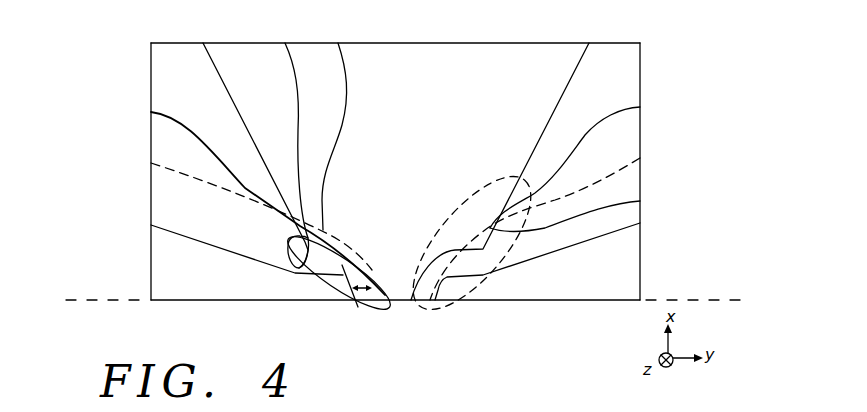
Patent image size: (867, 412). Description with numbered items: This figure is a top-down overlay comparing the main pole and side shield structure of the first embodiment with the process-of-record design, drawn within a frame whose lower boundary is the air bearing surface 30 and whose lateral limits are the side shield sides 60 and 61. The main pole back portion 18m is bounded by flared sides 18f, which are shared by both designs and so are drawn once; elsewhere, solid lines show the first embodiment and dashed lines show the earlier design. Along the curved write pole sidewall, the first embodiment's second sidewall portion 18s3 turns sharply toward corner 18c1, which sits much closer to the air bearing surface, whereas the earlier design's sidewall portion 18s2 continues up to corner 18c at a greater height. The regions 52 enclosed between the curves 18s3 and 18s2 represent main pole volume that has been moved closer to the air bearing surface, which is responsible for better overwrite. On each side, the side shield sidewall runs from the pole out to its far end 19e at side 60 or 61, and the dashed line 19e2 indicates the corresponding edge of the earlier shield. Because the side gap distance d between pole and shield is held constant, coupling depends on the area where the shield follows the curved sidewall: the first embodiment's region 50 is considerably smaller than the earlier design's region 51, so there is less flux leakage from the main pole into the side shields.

The main pole back portion 18m is at (457, 67).
The flared side of main pole 18f is at (219, 76).
The second portion of curved write pole sidewall 18s3 is at (285, 43).
The second portion of curved write pole sidewall (POR design) 18s2 is at (338, 43).
The corner 18c is at (640, 107).
The corner 18c1 is at (306, 270).
The far end of side shield third sidewall section 19e is at (151, 225).
The shield edge projection (dashed) 19e2 is at (151, 163).
The regions of added main pole volume 52 is at (151, 112).
The coupling region of first embodiment 50 is at (338, 303).
The coupling region of POR design 51 is at (468, 295).
The side of side shield 60 is at (151, 259).
The side of side shield 61 is at (640, 258).
The air bearing surface 30 is at (406, 303).
The side gap distance d is at (364, 291).